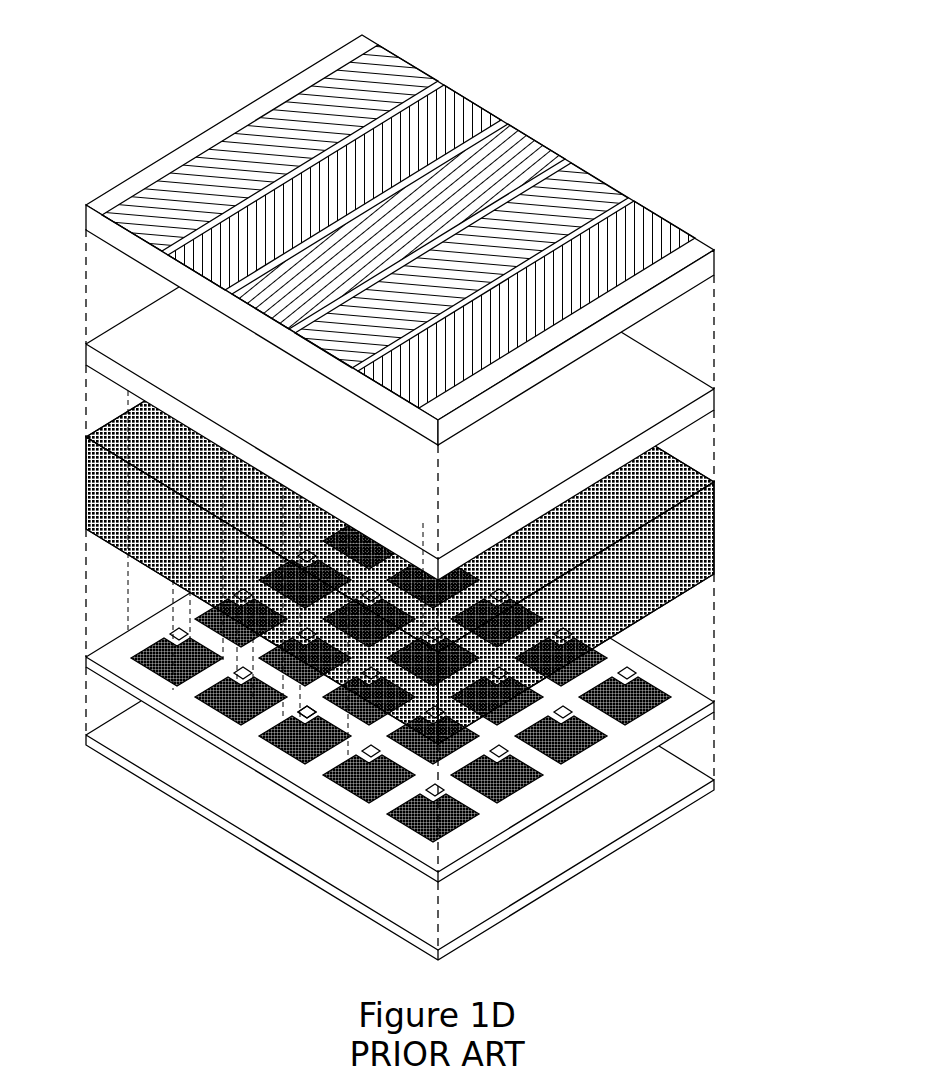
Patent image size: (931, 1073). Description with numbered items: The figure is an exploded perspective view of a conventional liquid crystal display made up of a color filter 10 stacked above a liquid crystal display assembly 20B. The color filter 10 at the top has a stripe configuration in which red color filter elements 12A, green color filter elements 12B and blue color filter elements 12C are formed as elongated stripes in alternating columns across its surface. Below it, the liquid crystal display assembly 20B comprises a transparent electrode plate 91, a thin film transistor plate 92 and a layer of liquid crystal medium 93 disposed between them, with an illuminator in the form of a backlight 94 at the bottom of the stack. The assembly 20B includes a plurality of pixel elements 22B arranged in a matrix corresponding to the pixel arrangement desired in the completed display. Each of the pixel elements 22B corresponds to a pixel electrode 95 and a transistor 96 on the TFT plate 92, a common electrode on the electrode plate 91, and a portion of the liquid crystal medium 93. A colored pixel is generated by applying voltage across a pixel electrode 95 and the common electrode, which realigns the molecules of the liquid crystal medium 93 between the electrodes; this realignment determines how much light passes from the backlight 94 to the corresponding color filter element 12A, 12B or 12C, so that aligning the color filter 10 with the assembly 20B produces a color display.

The color filter 10 is at (421, 236).
The red color filter element 12A is at (397, 78).
The green color filter element 12B is at (460, 117).
The blue color filter element 12C is at (522, 160).
The liquid crystal display assembly 20B is at (400, 567).
The pixel elements 22B is at (356, 703).
The transparent electrode plate 91 is at (672, 426).
The thin film transistor (TFT) plate 92 is at (415, 703).
The liquid crystal medium 93 is at (662, 566).
The backlight 94 is at (208, 785).
The pixel electrode 95 is at (282, 745).
The transistor 96 is at (308, 716).